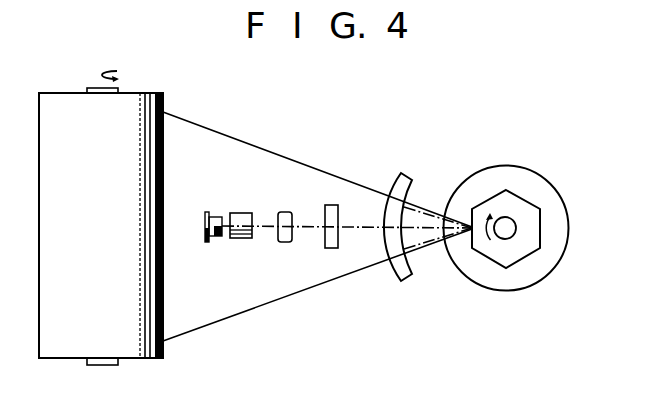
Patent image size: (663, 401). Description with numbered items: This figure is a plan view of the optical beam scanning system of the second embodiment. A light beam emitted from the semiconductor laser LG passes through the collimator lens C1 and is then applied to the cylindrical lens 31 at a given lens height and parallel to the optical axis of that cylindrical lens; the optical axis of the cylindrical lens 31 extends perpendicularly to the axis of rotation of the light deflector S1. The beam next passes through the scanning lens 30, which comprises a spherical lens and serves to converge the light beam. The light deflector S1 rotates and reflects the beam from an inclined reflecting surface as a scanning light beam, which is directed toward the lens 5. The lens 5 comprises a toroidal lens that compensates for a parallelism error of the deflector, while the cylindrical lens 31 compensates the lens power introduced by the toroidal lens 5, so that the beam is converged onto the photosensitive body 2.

The photosensitive body 2 is at (148, 92).
The semiconductor laser LG is at (205, 232).
The collimator lens C1 is at (244, 212).
The scanning lens 30 is at (285, 243).
The cylindrical lens 31 is at (331, 249).
The lens 5 is at (407, 176).
The light deflector S1 is at (566, 190).